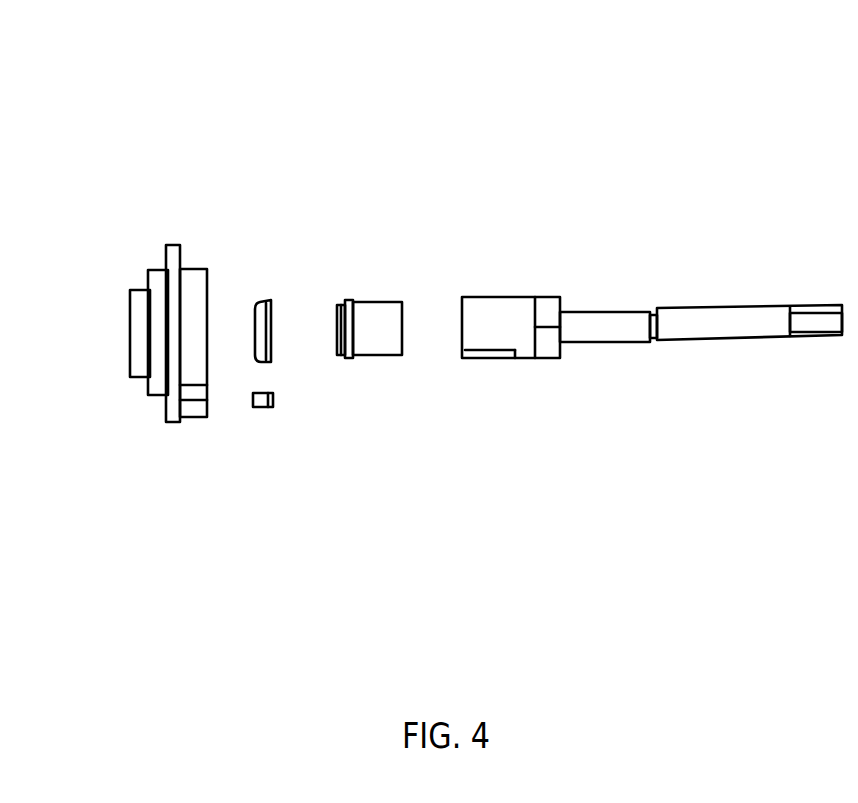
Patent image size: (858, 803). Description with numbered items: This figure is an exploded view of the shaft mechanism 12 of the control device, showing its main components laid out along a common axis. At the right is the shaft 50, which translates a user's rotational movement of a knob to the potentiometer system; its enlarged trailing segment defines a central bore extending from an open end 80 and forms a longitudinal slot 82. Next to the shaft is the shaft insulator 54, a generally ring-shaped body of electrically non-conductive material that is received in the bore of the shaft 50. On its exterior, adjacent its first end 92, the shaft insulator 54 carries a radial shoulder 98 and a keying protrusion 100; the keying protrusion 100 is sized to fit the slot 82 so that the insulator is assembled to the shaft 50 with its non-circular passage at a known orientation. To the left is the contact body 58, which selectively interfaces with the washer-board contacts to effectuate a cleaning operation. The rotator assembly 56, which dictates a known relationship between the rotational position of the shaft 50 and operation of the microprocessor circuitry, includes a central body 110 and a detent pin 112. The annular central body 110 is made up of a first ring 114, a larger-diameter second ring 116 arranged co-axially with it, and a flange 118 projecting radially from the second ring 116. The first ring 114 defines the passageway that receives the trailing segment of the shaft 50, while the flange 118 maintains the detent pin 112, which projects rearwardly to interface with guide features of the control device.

The shaft mechanism 12 is at (467, 77).
The shaft 50 is at (613, 307).
The shaft insulator 54 is at (382, 291).
The rotator assembly 56 is at (180, 243).
The contact body 58 is at (272, 300).
The open end 80 is at (509, 329).
The longitudinal slot 82 is at (487, 363).
The first end 92 is at (336, 327).
The radial shoulder 98 is at (353, 360).
The keying protrusion 100 is at (390, 302).
The central body 110 is at (152, 253).
The detent pin 112 is at (257, 415).
The first ring 114 is at (138, 378).
The second ring 116 is at (158, 396).
The flange 118 is at (180, 424).